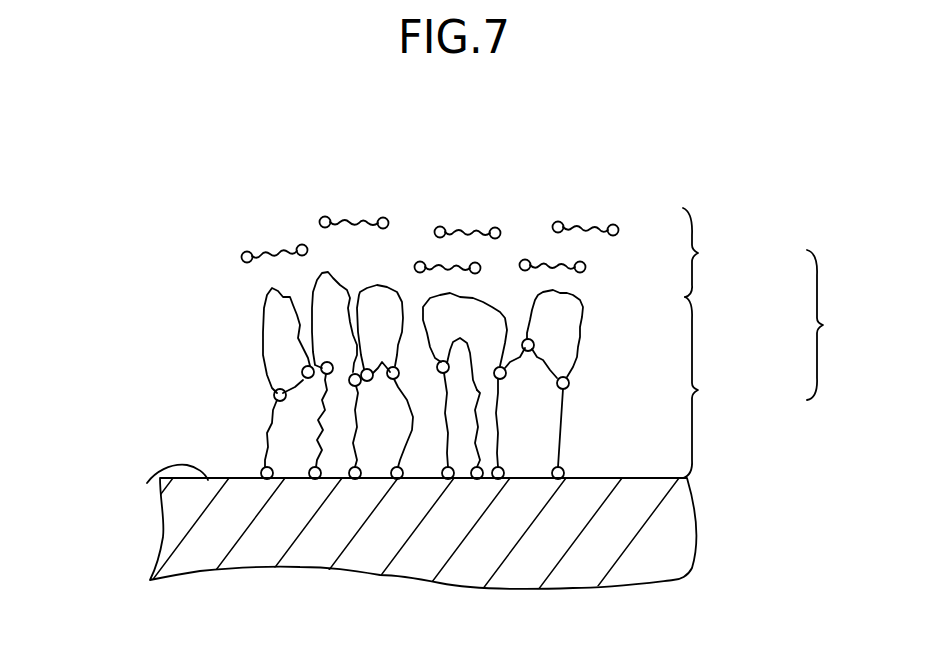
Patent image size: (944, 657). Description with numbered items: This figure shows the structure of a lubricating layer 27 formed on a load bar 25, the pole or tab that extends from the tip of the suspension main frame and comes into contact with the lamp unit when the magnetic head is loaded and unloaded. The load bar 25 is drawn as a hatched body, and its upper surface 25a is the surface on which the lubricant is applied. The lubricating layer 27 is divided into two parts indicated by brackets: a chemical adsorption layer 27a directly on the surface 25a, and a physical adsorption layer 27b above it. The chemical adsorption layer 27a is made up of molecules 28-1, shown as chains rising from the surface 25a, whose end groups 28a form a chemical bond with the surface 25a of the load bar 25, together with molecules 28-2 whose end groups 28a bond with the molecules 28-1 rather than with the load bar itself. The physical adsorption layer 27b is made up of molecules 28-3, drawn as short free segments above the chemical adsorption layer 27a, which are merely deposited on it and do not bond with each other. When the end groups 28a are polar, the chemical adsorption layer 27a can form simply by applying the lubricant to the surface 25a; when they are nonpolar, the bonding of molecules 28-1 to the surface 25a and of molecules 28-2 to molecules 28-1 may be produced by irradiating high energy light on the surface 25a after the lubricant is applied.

The load bar 25 is at (694, 521).
The surface of the load bar 25a is at (147, 483).
The lubricating layer 27 is at (832, 325).
The chemical adsorption layer 27a is at (716, 387).
The physical adsorption layer 27b is at (716, 252).
The molecules 28-1 is at (253, 414).
The molecules 28-2 is at (241, 326).
The molecules 28-3 is at (467, 204).
The end groups 28a is at (274, 392).